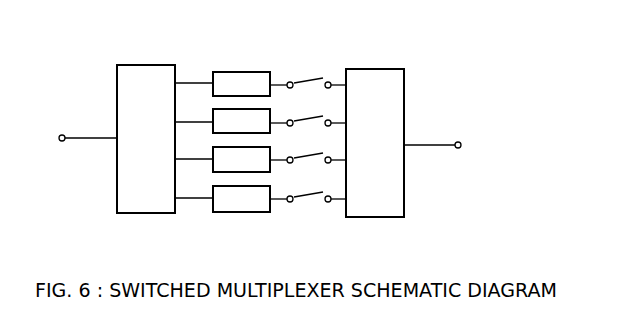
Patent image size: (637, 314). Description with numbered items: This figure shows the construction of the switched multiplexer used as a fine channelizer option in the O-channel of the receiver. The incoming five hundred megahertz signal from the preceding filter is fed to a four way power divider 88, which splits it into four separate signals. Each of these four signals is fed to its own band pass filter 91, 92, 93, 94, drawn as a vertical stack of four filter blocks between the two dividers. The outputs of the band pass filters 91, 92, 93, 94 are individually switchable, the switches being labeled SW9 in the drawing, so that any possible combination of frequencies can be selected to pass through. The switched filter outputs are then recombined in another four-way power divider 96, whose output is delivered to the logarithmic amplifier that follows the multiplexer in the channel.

The four way power divider 88 is at (146, 65).
The band pass filter 91 is at (255, 72).
The band pass filter 92 is at (270, 114).
The band pass filter 93 is at (270, 158).
The band pass filter 94 is at (270, 197).
The switches SW9 is at (308, 130).
The four-way power divider 96 is at (383, 69).